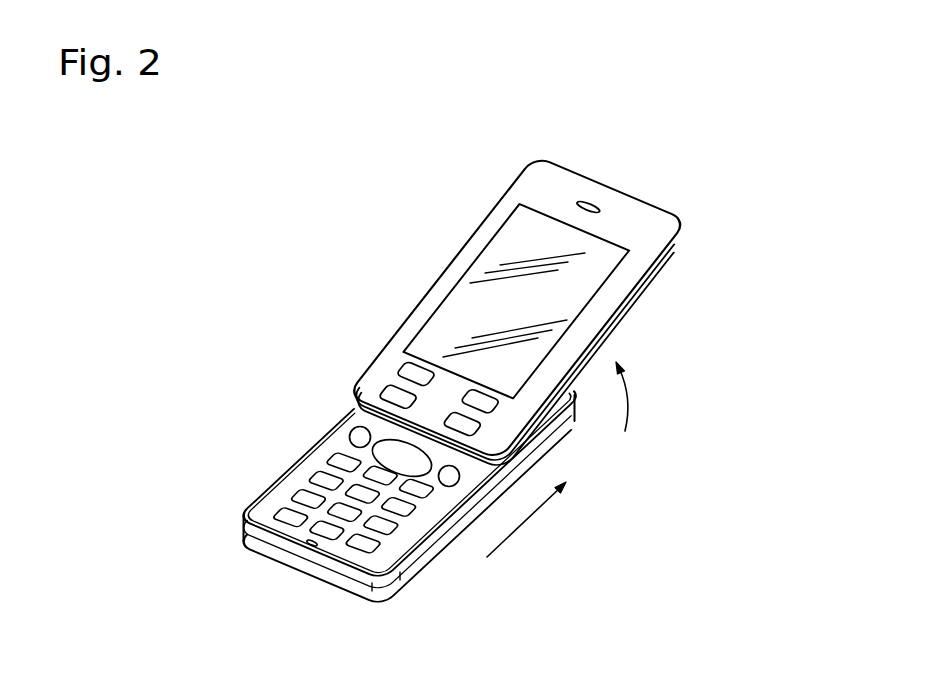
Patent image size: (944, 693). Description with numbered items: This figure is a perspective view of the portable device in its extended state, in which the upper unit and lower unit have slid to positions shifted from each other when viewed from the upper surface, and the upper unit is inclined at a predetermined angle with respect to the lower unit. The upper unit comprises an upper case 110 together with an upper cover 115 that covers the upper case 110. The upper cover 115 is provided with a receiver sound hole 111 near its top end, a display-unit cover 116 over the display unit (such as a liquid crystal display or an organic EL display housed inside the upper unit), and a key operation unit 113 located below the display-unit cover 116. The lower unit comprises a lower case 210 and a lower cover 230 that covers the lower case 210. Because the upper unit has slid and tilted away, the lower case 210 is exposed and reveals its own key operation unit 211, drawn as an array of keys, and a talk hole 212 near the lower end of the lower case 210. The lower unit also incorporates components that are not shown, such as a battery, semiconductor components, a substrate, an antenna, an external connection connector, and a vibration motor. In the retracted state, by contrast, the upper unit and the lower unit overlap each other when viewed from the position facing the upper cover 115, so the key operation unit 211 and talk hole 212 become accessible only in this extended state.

The upper case 110 is at (680, 246).
The receiver sound hole 111 is at (590, 201).
The key operation unit 113 is at (394, 382).
The upper cover 115 is at (638, 217).
The display-unit cover 116 is at (462, 297).
The lower case 210 is at (302, 548).
The key operation unit 211 is at (283, 513).
The talk hole 212 is at (303, 550).
The lower cover 230 is at (437, 540).